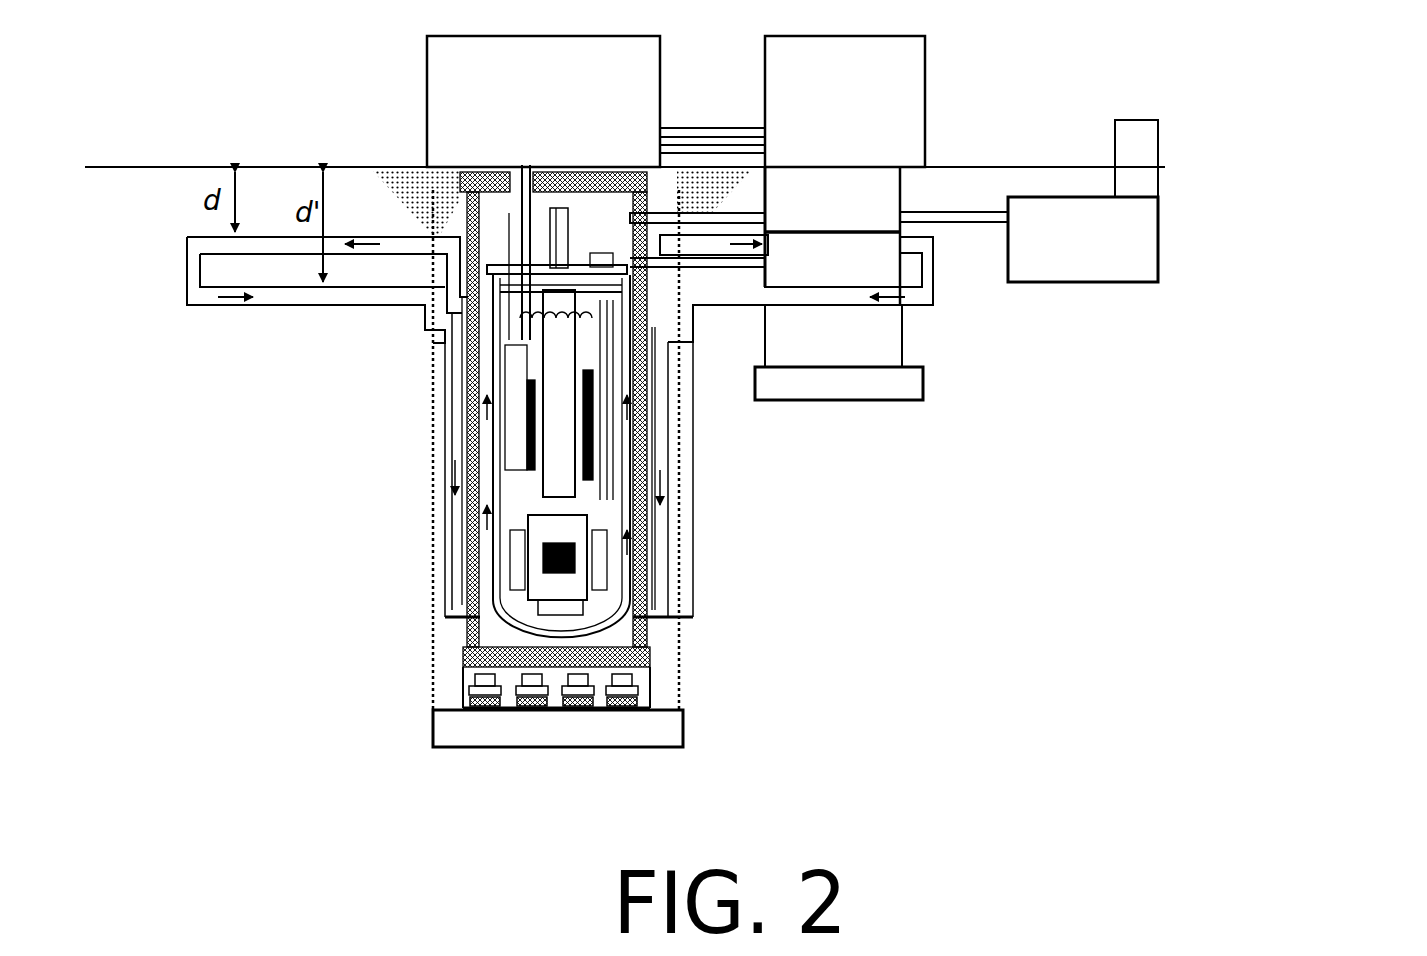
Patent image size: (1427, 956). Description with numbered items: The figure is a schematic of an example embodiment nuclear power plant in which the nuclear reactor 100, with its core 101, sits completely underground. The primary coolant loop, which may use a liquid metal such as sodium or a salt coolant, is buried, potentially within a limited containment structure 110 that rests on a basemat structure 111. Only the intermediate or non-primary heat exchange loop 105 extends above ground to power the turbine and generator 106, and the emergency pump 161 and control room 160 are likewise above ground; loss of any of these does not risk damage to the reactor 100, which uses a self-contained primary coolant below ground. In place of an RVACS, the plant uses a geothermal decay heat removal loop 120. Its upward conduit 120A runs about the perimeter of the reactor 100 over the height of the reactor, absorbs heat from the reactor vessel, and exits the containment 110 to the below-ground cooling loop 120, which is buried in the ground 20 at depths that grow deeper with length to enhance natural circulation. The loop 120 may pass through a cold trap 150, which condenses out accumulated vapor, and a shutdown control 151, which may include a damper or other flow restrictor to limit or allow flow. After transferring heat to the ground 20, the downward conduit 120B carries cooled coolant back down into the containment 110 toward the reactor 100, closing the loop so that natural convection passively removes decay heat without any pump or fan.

The ground 20 is at (1000, 165).
The nuclear reactor 100 is at (520, 566).
The core 101 is at (560, 582).
The intermediate heat exchange loop 105 is at (517, 217).
The turbine and generator 106 is at (810, 105).
The containment structure 110 is at (688, 652).
The basemat structure 111 is at (655, 725).
The geothermal decay heat removal loop 120 is at (275, 308).
The upward conduit 120A is at (490, 418).
The downward conduit 120B is at (440, 338).
The cold trap 150 is at (880, 259).
The shutdown control 151 is at (866, 350).
The control room 160 is at (1120, 250).
The emergency pump 161 is at (878, 186).